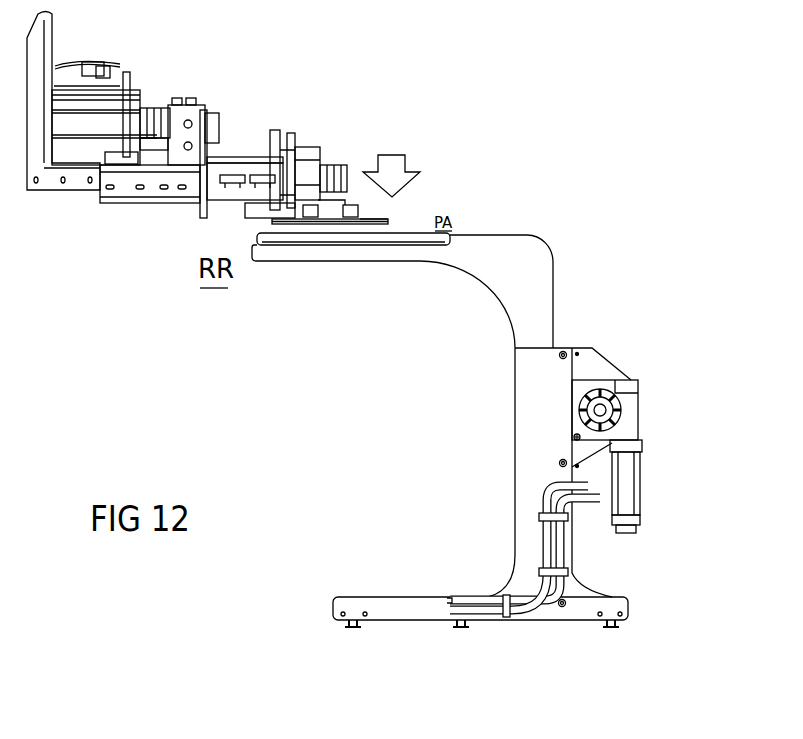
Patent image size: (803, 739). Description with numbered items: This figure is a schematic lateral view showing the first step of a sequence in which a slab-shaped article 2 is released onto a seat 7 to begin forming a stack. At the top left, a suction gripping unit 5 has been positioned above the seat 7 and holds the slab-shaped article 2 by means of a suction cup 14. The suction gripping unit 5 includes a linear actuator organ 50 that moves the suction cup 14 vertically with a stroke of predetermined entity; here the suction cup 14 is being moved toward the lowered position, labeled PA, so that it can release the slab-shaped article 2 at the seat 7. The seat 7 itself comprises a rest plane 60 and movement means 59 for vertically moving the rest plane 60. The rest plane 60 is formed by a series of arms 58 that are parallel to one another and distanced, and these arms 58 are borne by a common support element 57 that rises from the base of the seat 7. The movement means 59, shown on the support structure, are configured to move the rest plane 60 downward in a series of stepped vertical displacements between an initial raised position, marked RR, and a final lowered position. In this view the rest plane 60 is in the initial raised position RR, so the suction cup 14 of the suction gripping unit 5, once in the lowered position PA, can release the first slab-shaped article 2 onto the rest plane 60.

The suction gripping unit 5 is at (320, 108).
The linear actuator organ 50 is at (342, 167).
The suction cup 14 is at (370, 220).
The slab-shaped article 2 is at (390, 220).
The arms 58 is at (405, 255).
The rest plane 60 is at (335, 257).
The common support element 57 is at (523, 327).
The movement means 59 is at (655, 460).
The seat 7 is at (373, 447).